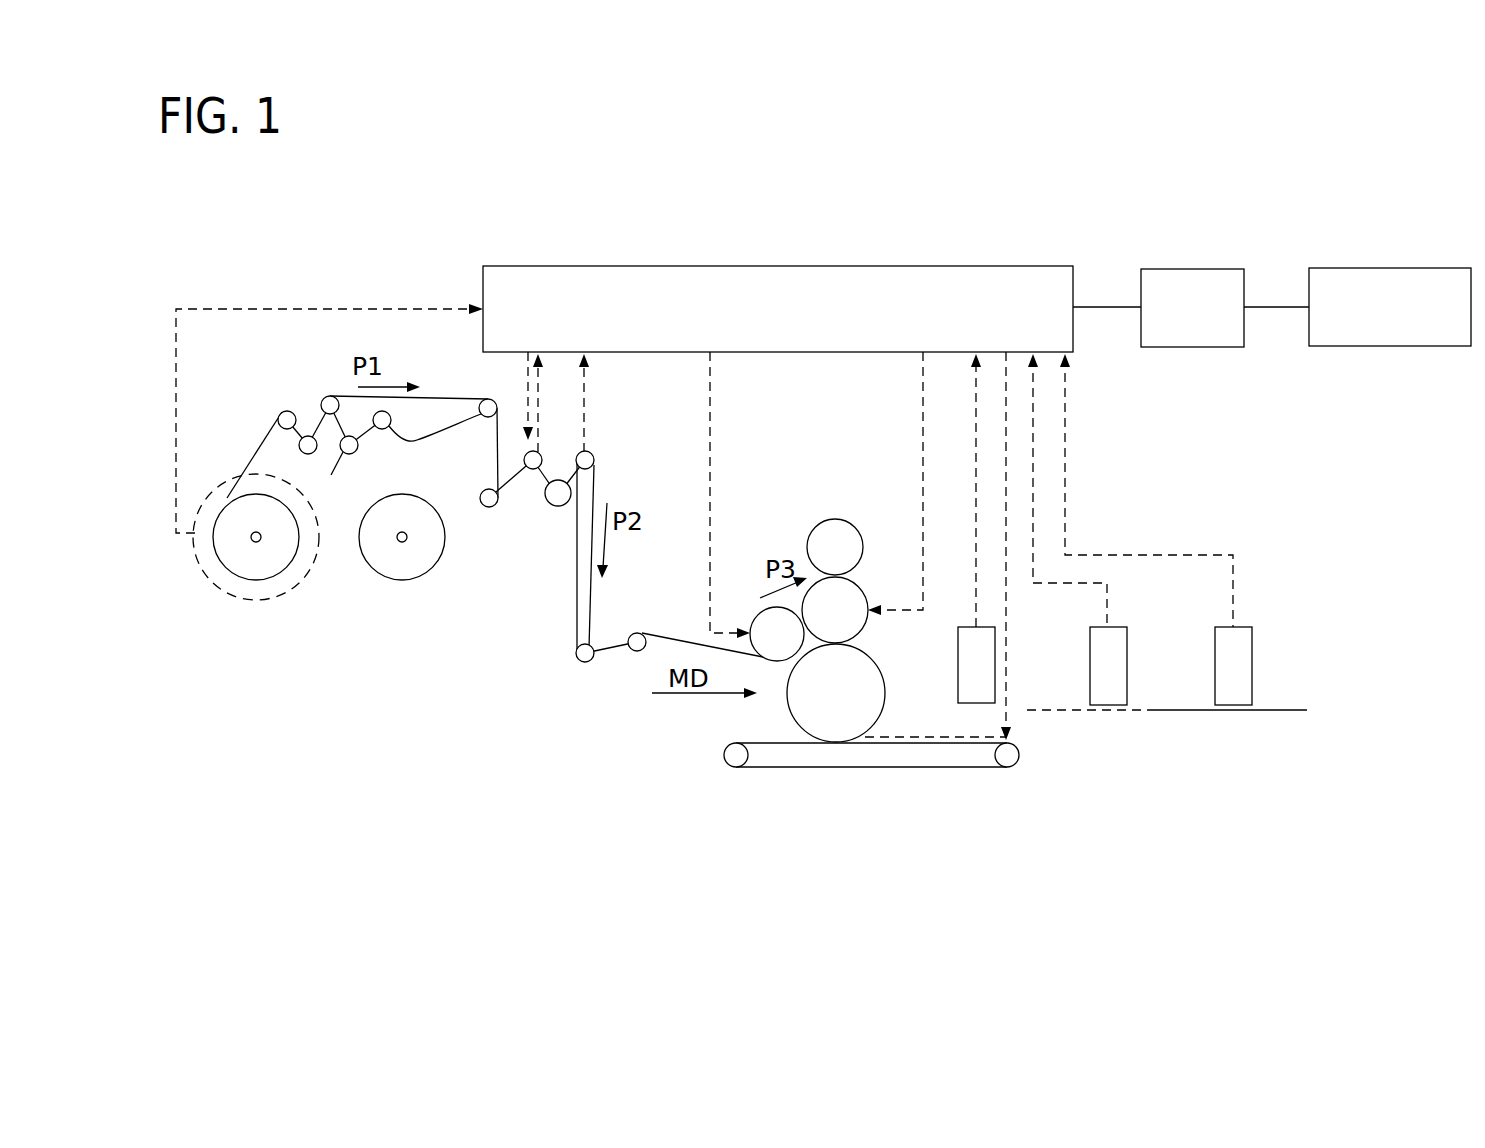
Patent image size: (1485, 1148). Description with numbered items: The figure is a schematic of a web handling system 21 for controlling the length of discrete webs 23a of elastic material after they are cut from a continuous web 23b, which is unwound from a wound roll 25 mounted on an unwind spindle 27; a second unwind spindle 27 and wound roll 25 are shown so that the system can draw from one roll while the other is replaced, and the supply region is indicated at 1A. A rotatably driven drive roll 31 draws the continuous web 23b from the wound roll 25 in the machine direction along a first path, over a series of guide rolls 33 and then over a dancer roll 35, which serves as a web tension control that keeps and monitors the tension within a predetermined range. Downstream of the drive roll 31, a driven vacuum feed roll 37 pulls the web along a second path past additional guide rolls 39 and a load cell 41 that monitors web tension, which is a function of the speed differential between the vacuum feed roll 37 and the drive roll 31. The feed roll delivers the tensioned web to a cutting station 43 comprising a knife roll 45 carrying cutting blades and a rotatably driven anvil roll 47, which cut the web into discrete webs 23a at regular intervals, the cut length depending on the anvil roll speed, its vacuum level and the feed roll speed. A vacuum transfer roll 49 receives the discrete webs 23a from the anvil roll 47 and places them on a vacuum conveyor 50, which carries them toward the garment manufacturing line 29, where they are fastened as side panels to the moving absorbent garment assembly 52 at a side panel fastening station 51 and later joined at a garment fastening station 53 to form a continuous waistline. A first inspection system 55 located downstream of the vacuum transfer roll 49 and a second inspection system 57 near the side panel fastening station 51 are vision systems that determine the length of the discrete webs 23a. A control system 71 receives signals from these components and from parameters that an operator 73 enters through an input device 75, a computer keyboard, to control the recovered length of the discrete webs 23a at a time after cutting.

The web supply roll assembly 1A is at (203, 572).
The web handling system 21 is at (872, 228).
The discrete webs 23a is at (908, 737).
The continuous web 23b is at (578, 613).
The wound roll 25 is at (238, 578).
The unwind spindle 27 is at (398, 540).
The manufacturing line 29 is at (1167, 741).
The drive roll 31 is at (558, 507).
The guide rolls 33 is at (323, 399).
The dancer roll 35 is at (531, 470).
The vacuum feed roll 37 is at (762, 618).
The guide rolls 39 is at (590, 640).
The load cell 41 is at (592, 452).
The cutting station 43 is at (835, 497).
The knife roll 45 is at (853, 529).
The anvil roll 47 is at (860, 584).
The vacuum transfer roll 49 is at (790, 708).
The vacuum conveyor 50 is at (907, 767).
The side panel fastening station 51 is at (1135, 634).
The absorbent garment assembly 52 is at (1197, 712).
The garment fastening station 53 is at (1262, 633).
The first inspection system 55 is at (958, 645).
The second inspection system 57 is at (1090, 648).
The control system 71 is at (570, 266).
The operator 73 is at (1380, 268).
The input device 75 is at (1187, 269).